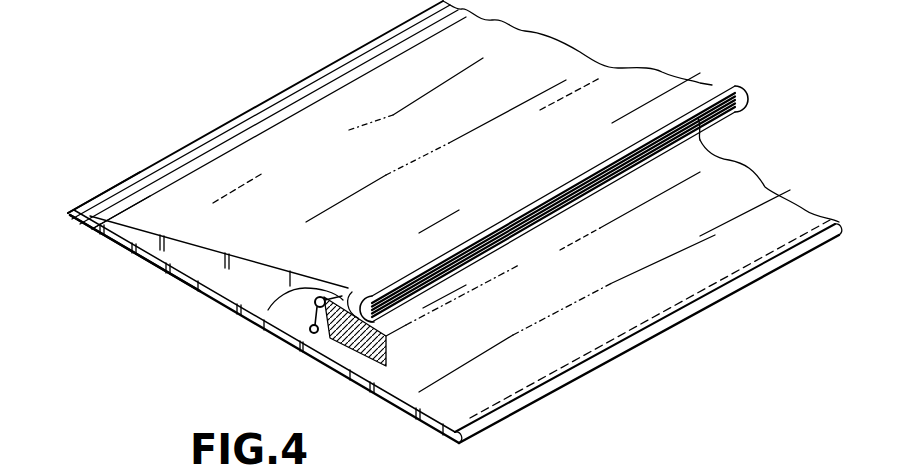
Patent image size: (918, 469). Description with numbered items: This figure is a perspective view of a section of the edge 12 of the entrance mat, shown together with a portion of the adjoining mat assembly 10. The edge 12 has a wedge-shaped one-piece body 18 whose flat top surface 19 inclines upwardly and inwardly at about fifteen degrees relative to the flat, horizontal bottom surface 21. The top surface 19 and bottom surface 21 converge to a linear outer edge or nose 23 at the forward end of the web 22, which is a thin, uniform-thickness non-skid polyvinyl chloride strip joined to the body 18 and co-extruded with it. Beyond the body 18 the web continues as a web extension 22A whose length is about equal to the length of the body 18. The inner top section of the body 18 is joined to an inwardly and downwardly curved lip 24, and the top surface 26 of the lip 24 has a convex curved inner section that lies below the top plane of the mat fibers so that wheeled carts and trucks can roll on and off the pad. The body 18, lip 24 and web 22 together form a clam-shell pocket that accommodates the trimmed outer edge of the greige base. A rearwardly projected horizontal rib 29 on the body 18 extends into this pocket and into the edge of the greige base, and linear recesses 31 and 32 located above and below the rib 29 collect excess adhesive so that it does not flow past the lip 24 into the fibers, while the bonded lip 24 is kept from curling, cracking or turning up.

The transition assembly 10 is at (674, 437).
The edge 12 is at (660, 67).
The body 18 is at (247, 282).
The top surface 19 is at (322, 107).
The bottom surface 21 is at (160, 267).
The web 22 is at (133, 195).
The web extension 22A is at (732, 200).
The nose 23 is at (200, 143).
The lip 24 is at (377, 320).
The top surface of lip 26 is at (712, 85).
The rib 29 is at (318, 305).
The recess 31 is at (268, 310).
The recess 32 is at (319, 327).